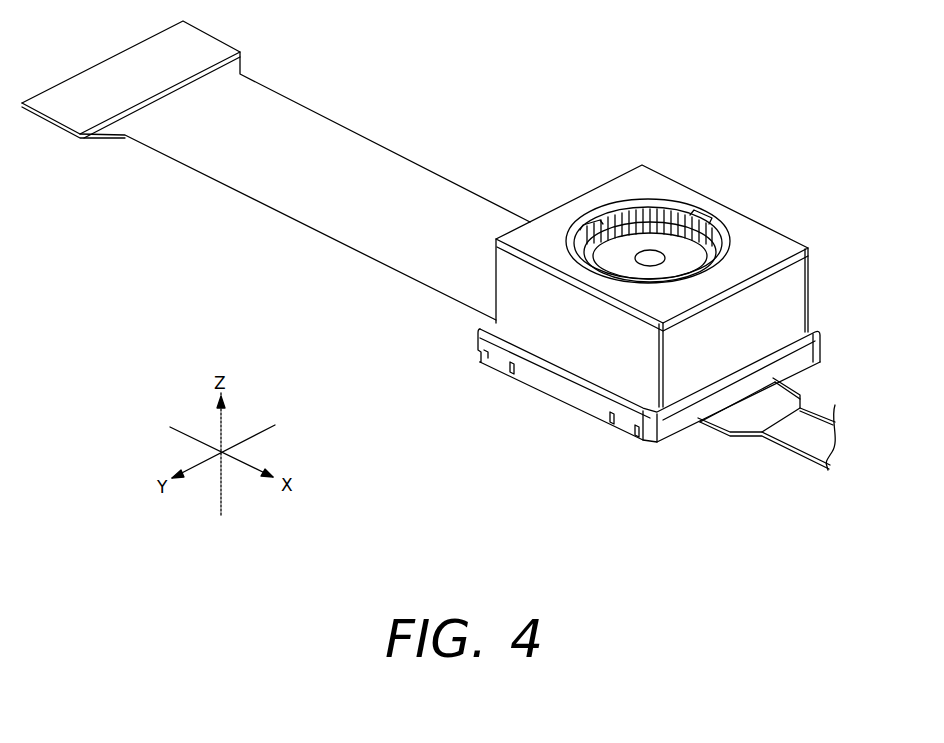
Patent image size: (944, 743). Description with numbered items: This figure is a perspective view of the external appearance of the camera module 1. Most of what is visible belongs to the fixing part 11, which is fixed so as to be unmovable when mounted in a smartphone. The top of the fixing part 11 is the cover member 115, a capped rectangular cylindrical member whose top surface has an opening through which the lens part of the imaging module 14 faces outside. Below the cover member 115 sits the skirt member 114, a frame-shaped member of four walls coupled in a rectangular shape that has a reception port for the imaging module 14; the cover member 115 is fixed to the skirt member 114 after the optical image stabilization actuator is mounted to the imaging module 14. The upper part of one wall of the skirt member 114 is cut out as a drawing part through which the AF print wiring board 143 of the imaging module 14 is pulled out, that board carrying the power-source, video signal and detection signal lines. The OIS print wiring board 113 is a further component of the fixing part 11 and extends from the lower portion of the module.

The camera module 1 is at (679, 110).
The fixing part 11 is at (616, 305).
The imaging module 14 is at (624, 240).
The AF print wiring board 143 is at (307, 212).
The OIS print wiring board 113 is at (802, 452).
The skirt member 114 is at (478, 343).
The cover member 115 is at (760, 222).